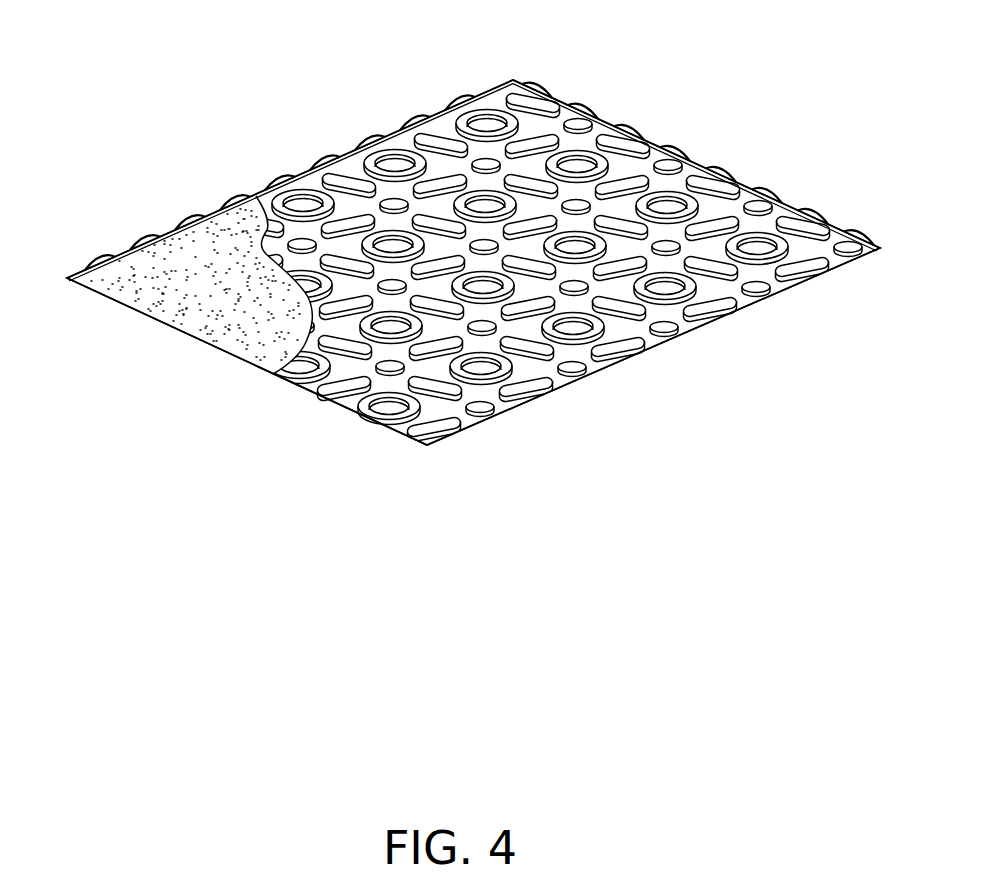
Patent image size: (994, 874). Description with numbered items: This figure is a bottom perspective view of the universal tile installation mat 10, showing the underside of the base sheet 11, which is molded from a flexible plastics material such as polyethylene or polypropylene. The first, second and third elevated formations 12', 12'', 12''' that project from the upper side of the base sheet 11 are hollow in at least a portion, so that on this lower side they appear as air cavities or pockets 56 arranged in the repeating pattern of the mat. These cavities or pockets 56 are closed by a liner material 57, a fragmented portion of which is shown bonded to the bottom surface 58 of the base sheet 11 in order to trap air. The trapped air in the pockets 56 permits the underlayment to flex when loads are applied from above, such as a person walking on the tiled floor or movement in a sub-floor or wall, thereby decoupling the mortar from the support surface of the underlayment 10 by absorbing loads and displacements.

The universal tile installation mat 10 is at (365, 102).
The base sheet 11 is at (672, 180).
The first elevated formation 12' is at (487, 95).
The second elevated formation 12'' is at (554, 80).
The third elevated formation 12''' is at (616, 106).
The air cavities or pockets 56 is at (712, 308).
The liner material 57 is at (200, 260).
The bottom surface 58 is at (762, 226).